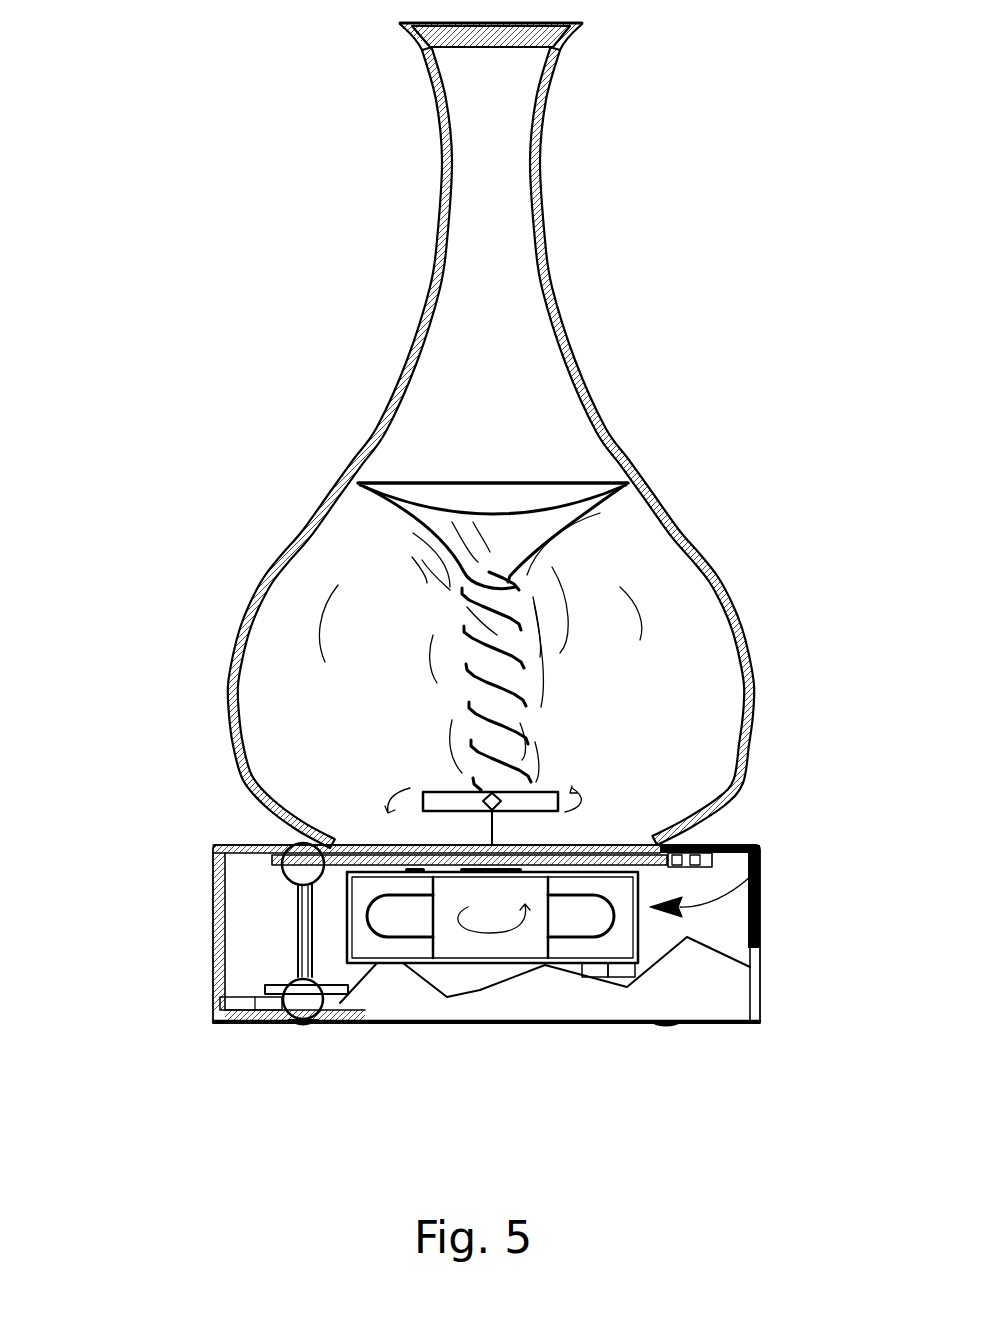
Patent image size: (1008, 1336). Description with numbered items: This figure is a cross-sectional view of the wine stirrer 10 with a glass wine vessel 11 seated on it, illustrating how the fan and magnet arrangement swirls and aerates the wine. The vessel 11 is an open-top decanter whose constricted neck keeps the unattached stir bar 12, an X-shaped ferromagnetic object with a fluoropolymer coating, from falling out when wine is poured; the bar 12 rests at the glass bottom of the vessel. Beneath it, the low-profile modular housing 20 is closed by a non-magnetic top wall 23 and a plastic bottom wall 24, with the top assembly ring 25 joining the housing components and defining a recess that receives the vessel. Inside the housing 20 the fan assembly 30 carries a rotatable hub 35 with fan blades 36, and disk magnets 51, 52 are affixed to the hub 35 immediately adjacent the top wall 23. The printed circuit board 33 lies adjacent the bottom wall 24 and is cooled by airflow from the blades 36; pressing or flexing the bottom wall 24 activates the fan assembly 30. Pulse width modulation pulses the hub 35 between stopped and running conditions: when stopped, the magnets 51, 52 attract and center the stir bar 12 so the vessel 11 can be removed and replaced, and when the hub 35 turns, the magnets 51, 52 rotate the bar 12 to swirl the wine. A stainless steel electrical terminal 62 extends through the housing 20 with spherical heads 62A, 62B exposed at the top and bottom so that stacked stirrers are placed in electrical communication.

The wine stirrer 10 is at (170, 815).
The glass wine vessel 11 is at (430, 287).
The stir bar 12 is at (555, 785).
The housing 20 is at (762, 922).
The top wall 23 is at (255, 865).
The bottom wall 24 is at (340, 1003).
The top assembly ring 25 is at (232, 845).
The fan assembly 30 is at (760, 877).
The printed circuit board 33 is at (272, 975).
The rotatable hub 35 is at (523, 947).
The fan blades 36 is at (403, 918).
The disk magnet 51 is at (435, 890).
The disk magnet 52 is at (548, 890).
The electrical terminal 62 is at (297, 933).
The spherical head 62A is at (297, 875).
The spherical head 62B is at (300, 1003).